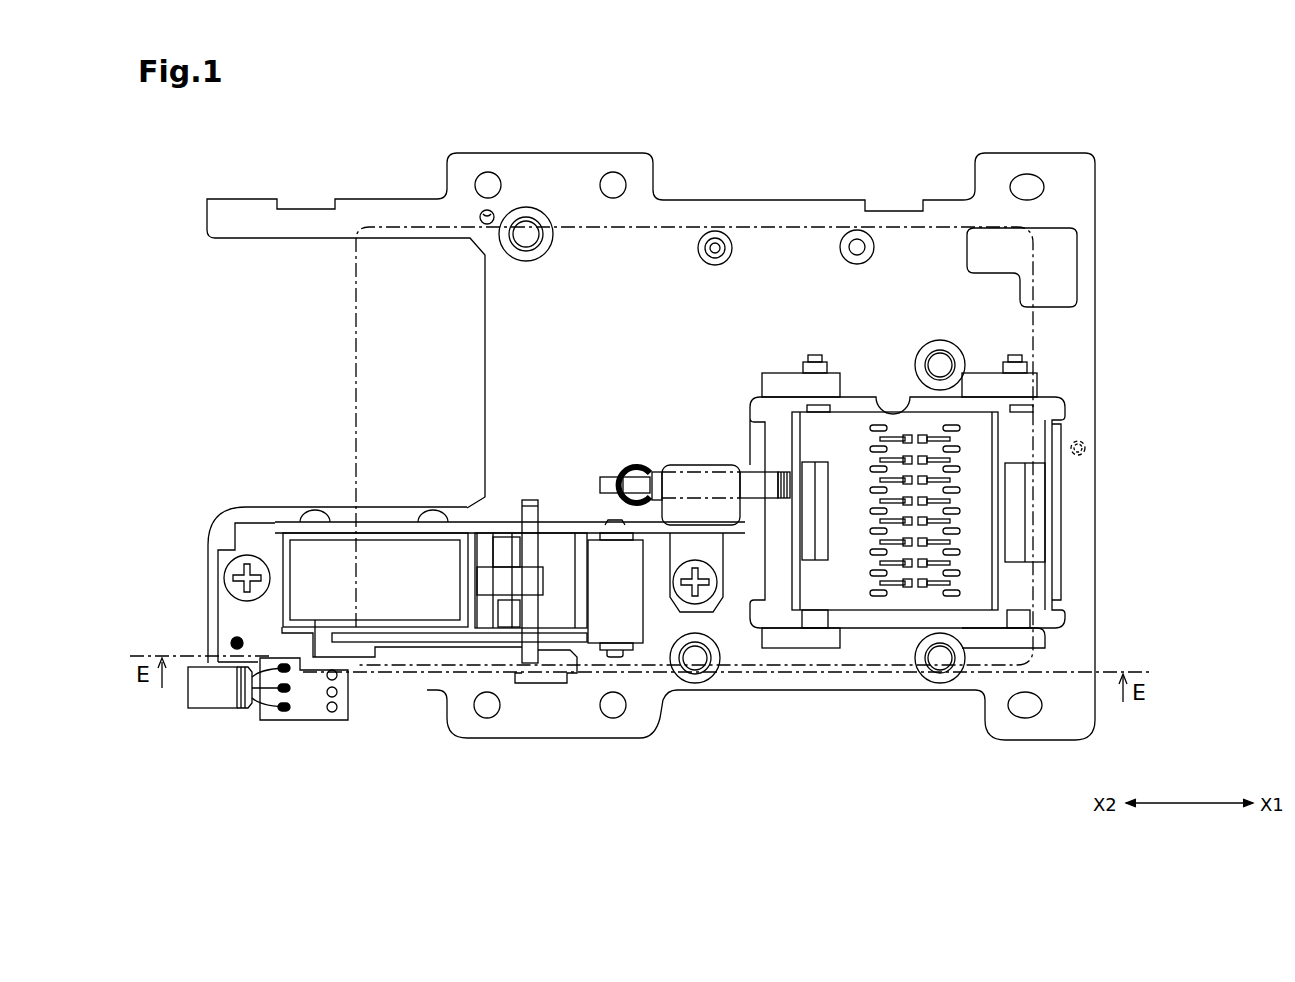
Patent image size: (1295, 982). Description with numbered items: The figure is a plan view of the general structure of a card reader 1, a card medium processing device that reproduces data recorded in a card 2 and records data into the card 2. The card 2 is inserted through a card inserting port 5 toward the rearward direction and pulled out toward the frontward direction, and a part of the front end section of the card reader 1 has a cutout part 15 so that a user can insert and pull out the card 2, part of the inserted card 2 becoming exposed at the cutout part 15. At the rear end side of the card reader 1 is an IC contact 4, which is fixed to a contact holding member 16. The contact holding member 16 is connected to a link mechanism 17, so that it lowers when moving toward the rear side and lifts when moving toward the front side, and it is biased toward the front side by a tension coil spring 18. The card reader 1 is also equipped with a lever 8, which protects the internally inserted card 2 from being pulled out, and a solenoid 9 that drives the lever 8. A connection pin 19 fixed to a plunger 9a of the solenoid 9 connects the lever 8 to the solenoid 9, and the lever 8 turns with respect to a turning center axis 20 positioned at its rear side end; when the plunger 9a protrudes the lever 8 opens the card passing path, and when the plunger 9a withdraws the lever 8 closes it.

The card reader 1 is at (1113, 110).
The card 2 is at (356, 383).
The IC contact 4 is at (910, 408).
The card inserting port 5 is at (210, 488).
The lever 8 is at (427, 647).
The solenoid 9 is at (382, 540).
The plunger 9a is at (512, 548).
The cutout part 15 is at (322, 302).
The contact holding member 16 is at (1055, 577).
The link mechanism 17 is at (811, 352).
The tension coil spring 18 is at (712, 467).
The connection pin 19 is at (542, 506).
The turning center axis 20 is at (628, 653).